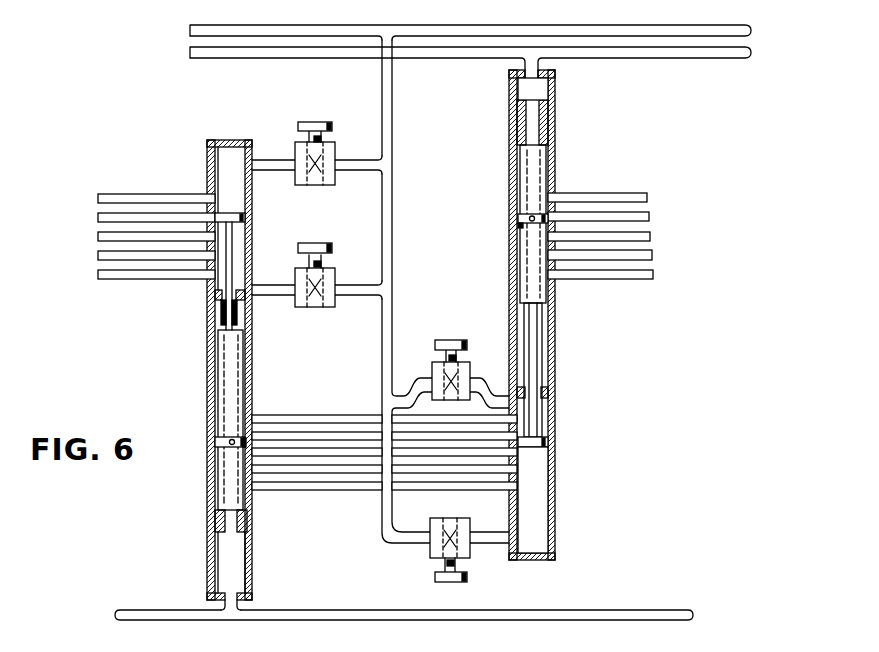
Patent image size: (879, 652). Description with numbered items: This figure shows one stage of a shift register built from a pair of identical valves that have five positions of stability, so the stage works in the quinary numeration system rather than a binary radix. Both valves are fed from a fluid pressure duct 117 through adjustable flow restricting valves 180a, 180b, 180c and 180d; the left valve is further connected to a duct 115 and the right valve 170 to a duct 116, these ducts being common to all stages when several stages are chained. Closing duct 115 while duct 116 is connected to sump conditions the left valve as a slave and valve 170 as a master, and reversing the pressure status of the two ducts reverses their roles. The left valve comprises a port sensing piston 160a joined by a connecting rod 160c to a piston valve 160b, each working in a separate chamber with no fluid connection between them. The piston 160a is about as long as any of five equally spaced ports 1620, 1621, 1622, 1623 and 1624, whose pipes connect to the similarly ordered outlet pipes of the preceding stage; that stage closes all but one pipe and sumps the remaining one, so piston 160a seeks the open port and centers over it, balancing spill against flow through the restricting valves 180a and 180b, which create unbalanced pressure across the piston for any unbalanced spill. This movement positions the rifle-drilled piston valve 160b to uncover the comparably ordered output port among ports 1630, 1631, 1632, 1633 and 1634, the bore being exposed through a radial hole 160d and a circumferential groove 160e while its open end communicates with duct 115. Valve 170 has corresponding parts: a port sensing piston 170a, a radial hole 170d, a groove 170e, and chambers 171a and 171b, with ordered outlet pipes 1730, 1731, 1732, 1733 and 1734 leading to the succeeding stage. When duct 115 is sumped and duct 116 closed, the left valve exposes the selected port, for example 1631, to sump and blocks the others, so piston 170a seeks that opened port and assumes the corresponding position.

The duct 115 is at (307, 611).
The duct 116 is at (692, 53).
The fluid pressure duct 117 is at (482, 28).
The port sensing piston 160a is at (237, 213).
The piston valve 160b is at (230, 409).
The connecting rod 160c is at (230, 318).
The radial hole 160d is at (225, 440).
The circumferential groove 160e is at (242, 449).
The port 1620 is at (128, 197).
The port 1621 is at (110, 217).
The port 1622 is at (108, 237).
The port 1623 is at (108, 253).
The port 1624 is at (112, 274).
The output port 1630 is at (262, 420).
The output port 1631 is at (262, 436).
The output port 1632 is at (260, 452).
The output port 1633 is at (258, 474).
The output port 1634 is at (250, 490).
The valve 170 is at (530, 165).
The port sensing piston 170a is at (533, 447).
The radial hole 170d is at (520, 217).
The circumferential groove 170e is at (518, 226).
The fluid chamber 171a is at (557, 538).
The fluid chamber 171b is at (518, 96).
The outlet pipe 1730 is at (638, 198).
The outlet pipe 1731 is at (645, 217).
The outlet pipe 1732 is at (645, 236).
The outlet pipe 1733 is at (647, 255).
The outlet pipe 1734 is at (633, 275).
The adjustable flow restricting valve 180a is at (315, 122).
The adjustable flow restricting valve 180b is at (315, 244).
The adjustable flow restricting valve 180c is at (447, 340).
The adjustable flow restricting valve 180d is at (455, 583).